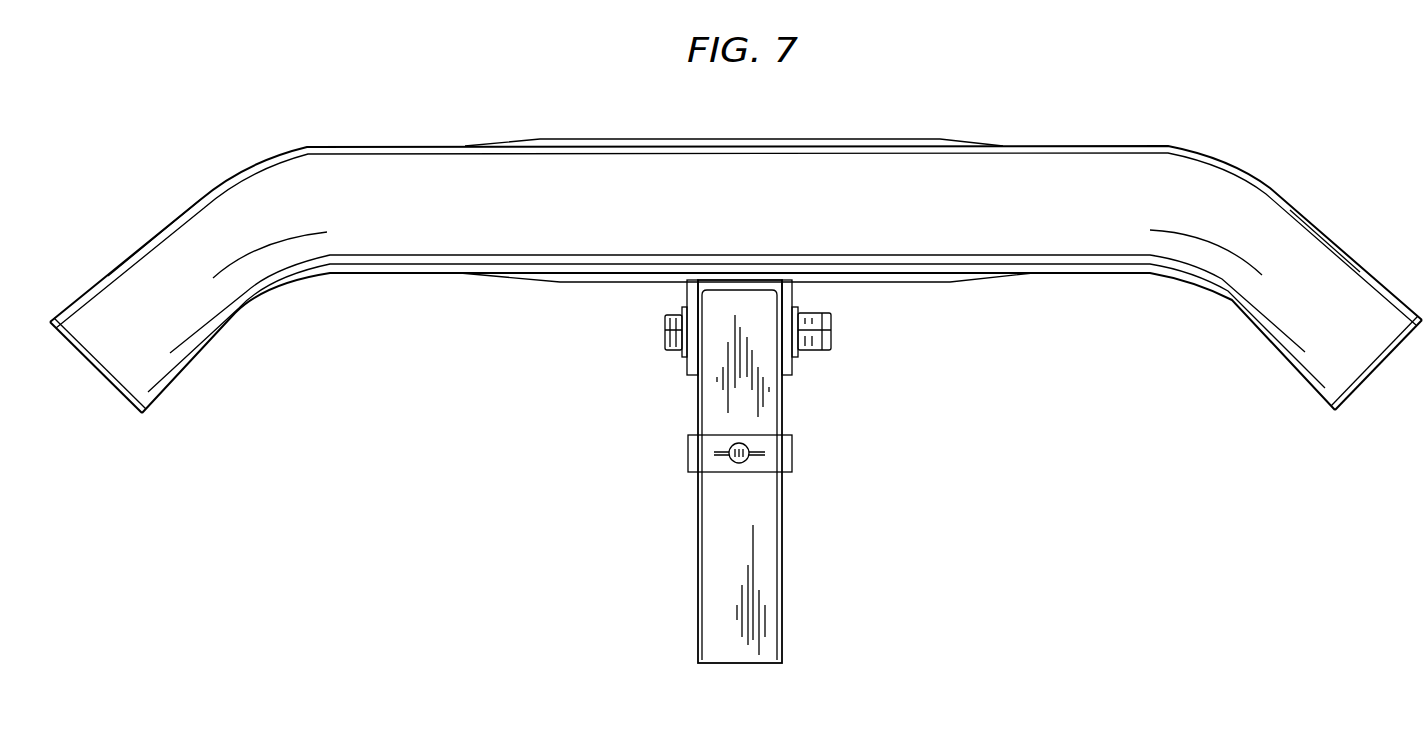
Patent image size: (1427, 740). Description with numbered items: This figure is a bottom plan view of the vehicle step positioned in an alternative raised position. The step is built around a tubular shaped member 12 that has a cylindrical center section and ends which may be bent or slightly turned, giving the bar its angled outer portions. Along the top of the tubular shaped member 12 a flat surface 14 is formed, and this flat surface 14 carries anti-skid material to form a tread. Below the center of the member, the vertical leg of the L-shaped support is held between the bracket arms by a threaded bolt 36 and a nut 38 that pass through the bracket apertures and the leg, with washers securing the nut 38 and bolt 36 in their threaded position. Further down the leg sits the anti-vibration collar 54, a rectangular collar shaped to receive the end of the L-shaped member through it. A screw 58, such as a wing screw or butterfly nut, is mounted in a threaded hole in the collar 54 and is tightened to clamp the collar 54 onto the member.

The tubular shaped member 12 is at (1223, 153).
The flat surface 14 is at (916, 140).
The threaded bolt 36 is at (665, 332).
The nut 38 is at (815, 345).
The collar 54 is at (688, 457).
The screw 58 is at (748, 462).